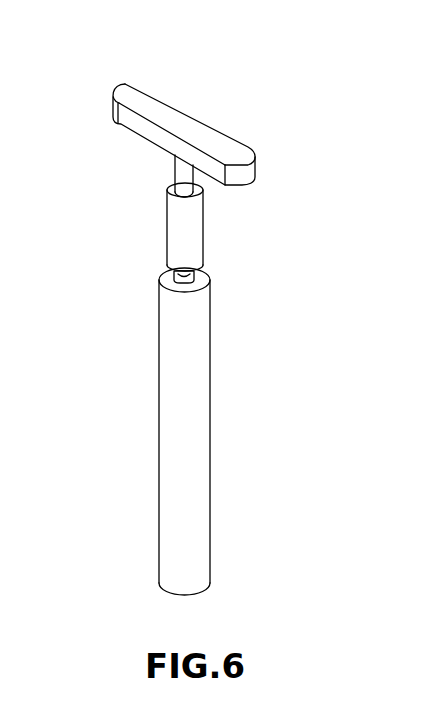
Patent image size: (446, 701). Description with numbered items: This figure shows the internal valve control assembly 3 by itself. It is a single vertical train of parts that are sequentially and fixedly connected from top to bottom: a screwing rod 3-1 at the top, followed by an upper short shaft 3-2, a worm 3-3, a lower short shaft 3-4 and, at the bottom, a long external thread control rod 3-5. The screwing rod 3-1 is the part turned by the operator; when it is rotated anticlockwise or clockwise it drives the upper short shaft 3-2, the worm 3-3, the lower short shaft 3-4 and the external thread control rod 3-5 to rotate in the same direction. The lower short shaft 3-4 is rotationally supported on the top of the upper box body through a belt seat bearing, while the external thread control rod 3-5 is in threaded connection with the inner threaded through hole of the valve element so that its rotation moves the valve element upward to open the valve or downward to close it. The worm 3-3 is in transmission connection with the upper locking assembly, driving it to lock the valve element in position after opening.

The valve control assembly 3 is at (194, 304).
The screwing rod 3-1 is at (228, 167).
The upper short shaft 3-2 is at (174, 177).
The worm 3-3 is at (168, 222).
The lower short shaft 3-4 is at (203, 288).
The external thread control rod 3-5 is at (173, 357).